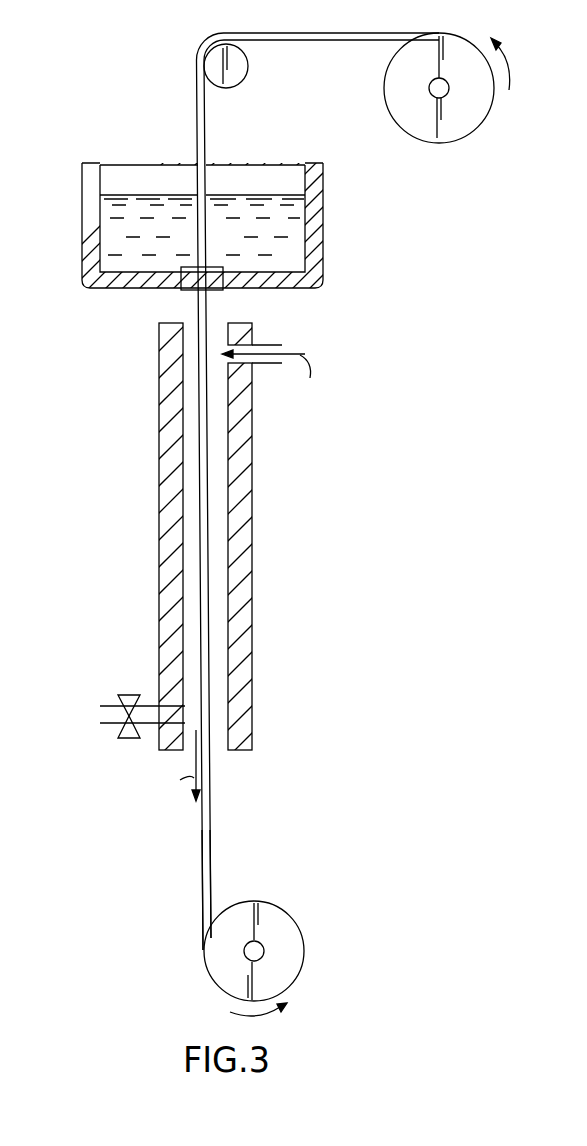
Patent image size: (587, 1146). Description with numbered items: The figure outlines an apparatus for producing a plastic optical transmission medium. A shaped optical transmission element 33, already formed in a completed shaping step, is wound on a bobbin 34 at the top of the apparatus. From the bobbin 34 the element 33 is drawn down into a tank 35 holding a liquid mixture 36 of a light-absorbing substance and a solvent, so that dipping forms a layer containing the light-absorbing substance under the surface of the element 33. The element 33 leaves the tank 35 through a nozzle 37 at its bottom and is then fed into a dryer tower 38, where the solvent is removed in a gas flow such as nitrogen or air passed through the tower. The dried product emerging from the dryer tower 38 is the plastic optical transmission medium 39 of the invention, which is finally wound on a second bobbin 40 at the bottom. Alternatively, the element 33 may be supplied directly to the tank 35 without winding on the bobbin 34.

The shaped optical transmission element 33 is at (297, 40).
The bobbin 34 is at (439, 143).
The tank 35 is at (325, 242).
The liquid mixture 36 is at (118, 253).
The nozzle 37 is at (185, 290).
The dryer tower 38 is at (211, 555).
The plastic optical transmission medium 39 is at (200, 888).
The bobbin 40 is at (296, 911).